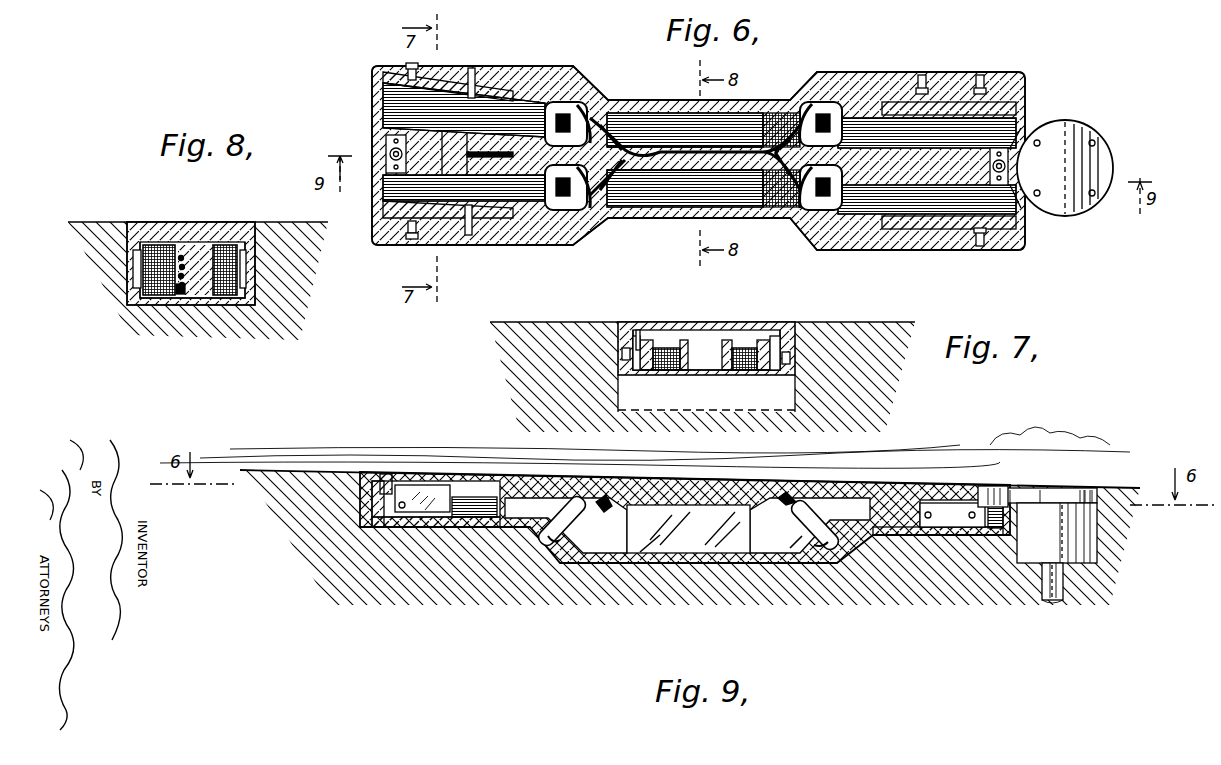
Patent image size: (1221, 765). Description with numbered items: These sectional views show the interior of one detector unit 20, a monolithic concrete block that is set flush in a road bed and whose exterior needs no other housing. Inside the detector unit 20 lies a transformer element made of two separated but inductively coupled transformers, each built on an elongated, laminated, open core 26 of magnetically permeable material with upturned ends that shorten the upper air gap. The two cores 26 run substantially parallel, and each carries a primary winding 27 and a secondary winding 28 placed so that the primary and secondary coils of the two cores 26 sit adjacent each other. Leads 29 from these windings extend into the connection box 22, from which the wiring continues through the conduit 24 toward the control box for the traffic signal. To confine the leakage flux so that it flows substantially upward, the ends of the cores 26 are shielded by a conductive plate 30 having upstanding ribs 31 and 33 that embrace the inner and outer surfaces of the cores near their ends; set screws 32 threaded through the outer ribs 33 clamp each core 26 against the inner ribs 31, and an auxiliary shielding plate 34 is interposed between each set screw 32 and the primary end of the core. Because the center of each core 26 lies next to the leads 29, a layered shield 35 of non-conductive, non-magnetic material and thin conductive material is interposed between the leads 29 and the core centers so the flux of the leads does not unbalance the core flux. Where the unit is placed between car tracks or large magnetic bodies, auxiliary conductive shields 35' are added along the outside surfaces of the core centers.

In FIG. 6, the detector unit 20 is at (1017, 78).
In FIG. 8, the detector unit 20 is at (232, 232).
In FIG. 7, the detector unit 20 is at (705, 332).
In FIG. 9, the detector unit 20 is at (693, 492).
In FIG. 6, the connection box 22 is at (1108, 158).
In FIG. 9, the connection box 22 is at (1072, 528).
In FIG. 9, the conduit 24 is at (1062, 582).
In FIG. 6, the core 26 is at (383, 105).
In FIG. 8, the core 26 is at (148, 245).
In FIG. 7, the core 26 is at (663, 348).
In FIG. 9, the core 26 is at (482, 518).
In FIG. 6, the primary winding 27 is at (566, 104).
In FIG. 9, the primary winding 27 is at (560, 492).
In FIG. 6, the secondary winding 28 is at (560, 212).
In FIG. 9, the secondary winding 28 is at (828, 490).
In FIG. 6, the leads 29 is at (612, 140).
In FIG. 8, the leads 29 is at (182, 300).
In FIG. 9, the leads 29 is at (603, 498).
In FIG. 7, the plate 30 is at (790, 378).
In FIG. 9, the plate 30 is at (400, 528).
In FIG. 6, the inner rib 31 is at (448, 175).
In FIG. 7, the inner rib 31 is at (684, 345).
In FIG. 9, the inner rib 31 is at (420, 488).
In FIG. 6, the set screw 32 is at (412, 80).
In FIG. 7, the set screw 32 is at (620, 348).
In FIG. 6, the outer rib 33 is at (500, 92).
In FIG. 7, the outer rib 33 is at (636, 338).
In FIG. 6, the auxiliary shielding plate 34 is at (478, 98).
In FIG. 7, the auxiliary shielding plate 34 is at (650, 340).
In FIG. 6, the shield 35 is at (685, 196).
In FIG. 8, the shield 35 is at (197, 242).
In FIG. 9, the shield 35 is at (688, 529).
In FIG. 6, the auxiliary shield 35' is at (714, 157).
In FIG. 8, the auxiliary shield 35' is at (189, 231).